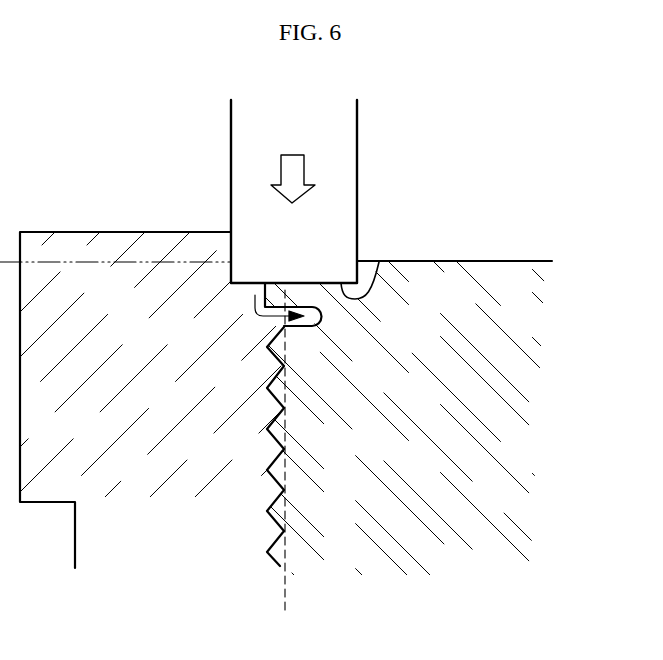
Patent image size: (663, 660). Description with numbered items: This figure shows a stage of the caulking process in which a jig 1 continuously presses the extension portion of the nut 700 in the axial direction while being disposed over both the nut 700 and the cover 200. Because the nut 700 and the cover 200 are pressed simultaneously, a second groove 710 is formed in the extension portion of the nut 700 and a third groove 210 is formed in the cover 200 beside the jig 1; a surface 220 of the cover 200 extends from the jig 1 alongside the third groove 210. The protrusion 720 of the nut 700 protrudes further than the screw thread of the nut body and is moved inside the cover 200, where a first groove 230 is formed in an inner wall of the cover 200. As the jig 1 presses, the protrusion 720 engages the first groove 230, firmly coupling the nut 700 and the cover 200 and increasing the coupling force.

The jig 1 is at (357, 115).
The cover 200 is at (488, 435).
The third groove 210 is at (379, 262).
The top surface 220 is at (502, 261).
The first groove 230 is at (322, 316).
The nut 700 is at (98, 234).
The second groove 710 is at (228, 247).
The protrusion 720 is at (303, 306).